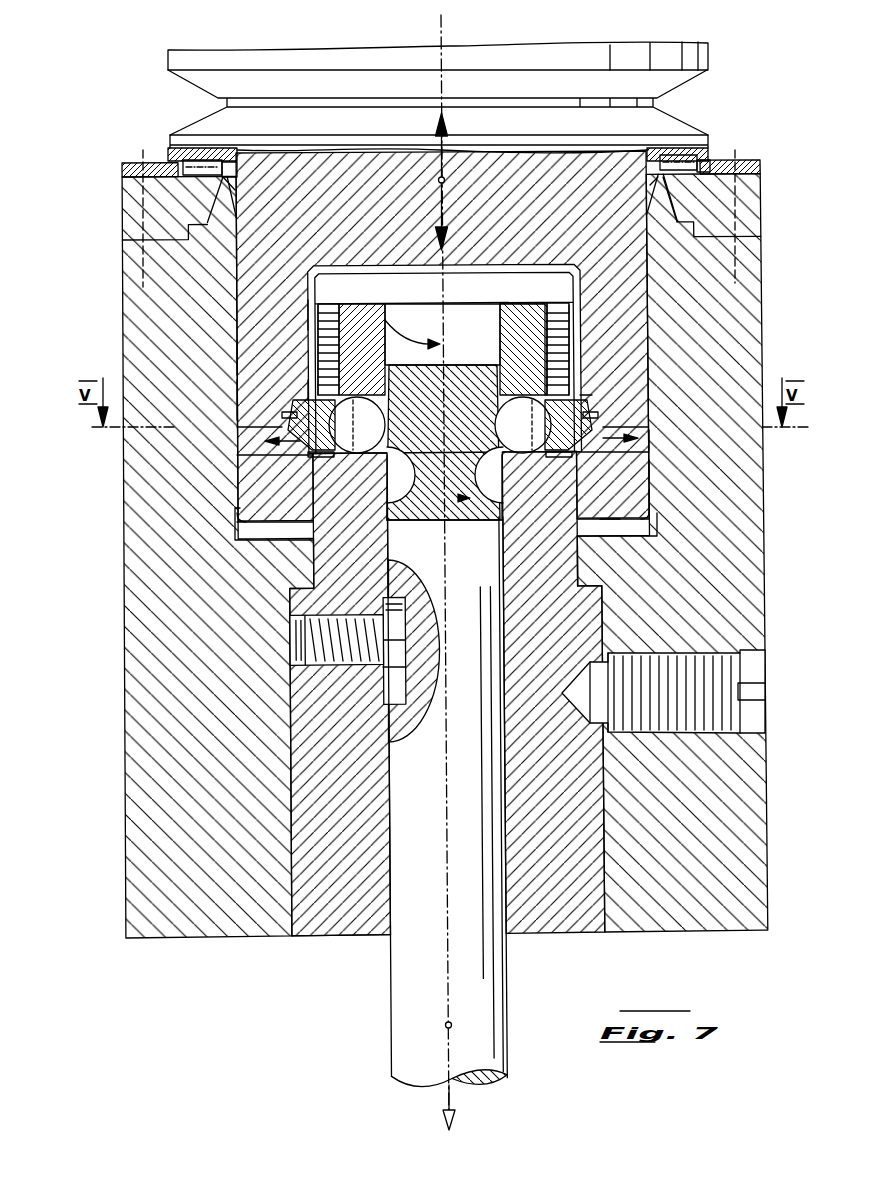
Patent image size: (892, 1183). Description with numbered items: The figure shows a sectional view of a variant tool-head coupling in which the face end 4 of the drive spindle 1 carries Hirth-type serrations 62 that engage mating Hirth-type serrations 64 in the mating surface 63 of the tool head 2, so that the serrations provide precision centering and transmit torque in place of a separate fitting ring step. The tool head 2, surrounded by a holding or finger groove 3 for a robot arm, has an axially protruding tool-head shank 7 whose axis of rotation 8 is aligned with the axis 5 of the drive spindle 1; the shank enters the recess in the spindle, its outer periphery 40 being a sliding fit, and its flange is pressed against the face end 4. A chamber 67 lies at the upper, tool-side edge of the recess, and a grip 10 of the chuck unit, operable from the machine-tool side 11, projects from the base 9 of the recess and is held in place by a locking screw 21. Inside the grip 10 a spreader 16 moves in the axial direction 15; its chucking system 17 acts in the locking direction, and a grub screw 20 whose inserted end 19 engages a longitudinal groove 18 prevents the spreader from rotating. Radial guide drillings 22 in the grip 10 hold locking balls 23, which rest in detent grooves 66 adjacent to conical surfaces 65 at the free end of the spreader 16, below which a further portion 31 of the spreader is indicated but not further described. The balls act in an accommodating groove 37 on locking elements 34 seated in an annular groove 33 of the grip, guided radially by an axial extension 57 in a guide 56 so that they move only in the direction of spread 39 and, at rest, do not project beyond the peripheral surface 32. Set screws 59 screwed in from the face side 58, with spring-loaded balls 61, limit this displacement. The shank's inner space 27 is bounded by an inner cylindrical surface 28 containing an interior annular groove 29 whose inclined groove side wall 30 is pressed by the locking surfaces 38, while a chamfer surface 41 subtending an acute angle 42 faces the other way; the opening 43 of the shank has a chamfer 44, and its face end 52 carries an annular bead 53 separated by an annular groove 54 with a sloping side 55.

The drive spindle 1 is at (759, 308).
The tool head 2 is at (710, 50).
The holding or finger groove 3 is at (685, 100).
The face end 4 is at (700, 140).
The axis 5 is at (445, 829).
The tool-head shank 7 is at (236, 300).
The axis of rotation 8 is at (443, 27).
The base 9 is at (656, 524).
The grip 10 is at (530, 298).
The machine-tool side 11 is at (328, 986).
The axial direction 15 is at (451, 181).
The spreader 16 is at (478, 375).
The chucking system / locking direction 17 is at (457, 1076).
The longitudinal groove 18 is at (415, 684).
The inserted end 19 is at (406, 650).
The grub screw 20 is at (292, 636).
The locking screw 21 is at (745, 678).
The radial guide drillings 22 is at (442, 334).
The locking ball 23 is at (442, 487).
The inner space 27 is at (372, 284).
The inner cylindrical surface 28 is at (320, 292).
The interior annular groove 29 is at (586, 394).
The groove side wall 30 is at (282, 415).
The shaft head face 31 is at (493, 520).
The peripheral surface 32 is at (300, 503).
The annular groove 33 is at (585, 398).
The locking elements 34 is at (298, 400).
The accommodating groove 37 is at (340, 426).
The locking surfaces 38 is at (613, 485).
The direction of spread 39 is at (268, 441).
The outer periphery 40 is at (236, 398).
The chamfer surface 41 is at (300, 385).
The acute angle 42 is at (412, 330).
The opening 43 is at (577, 556).
The chamfer 44 is at (577, 510).
The face end 52 is at (610, 522).
The annular bead 53 is at (655, 500).
The annular groove 54 is at (658, 470).
The sloping side 55 is at (655, 440).
The guide 56 is at (275, 488).
The axial extension 57 is at (340, 694).
The face side 58 is at (505, 300).
The set screws 59 is at (318, 340).
The balls 61 is at (318, 370).
The Hirth-type serrations 62 is at (185, 165).
The mating surface / flange surface 63 is at (662, 210).
The mating Hirth-type serrations 64 is at (235, 170).
The conical surfaces 65 is at (375, 400).
The detent grooves 66 is at (470, 445).
The chamber 67 is at (235, 190).